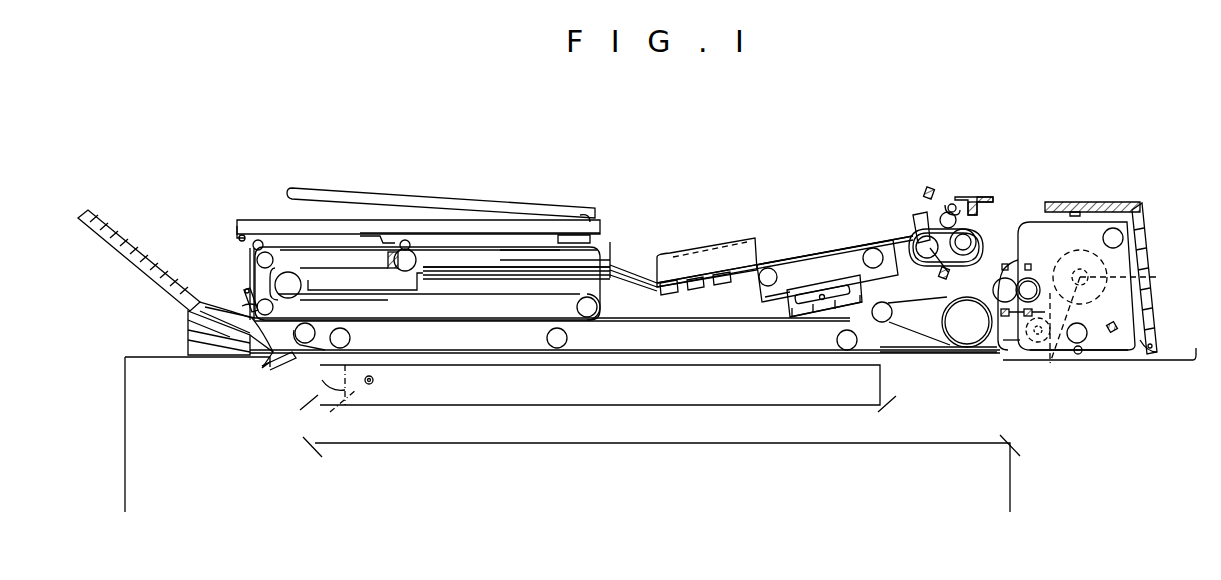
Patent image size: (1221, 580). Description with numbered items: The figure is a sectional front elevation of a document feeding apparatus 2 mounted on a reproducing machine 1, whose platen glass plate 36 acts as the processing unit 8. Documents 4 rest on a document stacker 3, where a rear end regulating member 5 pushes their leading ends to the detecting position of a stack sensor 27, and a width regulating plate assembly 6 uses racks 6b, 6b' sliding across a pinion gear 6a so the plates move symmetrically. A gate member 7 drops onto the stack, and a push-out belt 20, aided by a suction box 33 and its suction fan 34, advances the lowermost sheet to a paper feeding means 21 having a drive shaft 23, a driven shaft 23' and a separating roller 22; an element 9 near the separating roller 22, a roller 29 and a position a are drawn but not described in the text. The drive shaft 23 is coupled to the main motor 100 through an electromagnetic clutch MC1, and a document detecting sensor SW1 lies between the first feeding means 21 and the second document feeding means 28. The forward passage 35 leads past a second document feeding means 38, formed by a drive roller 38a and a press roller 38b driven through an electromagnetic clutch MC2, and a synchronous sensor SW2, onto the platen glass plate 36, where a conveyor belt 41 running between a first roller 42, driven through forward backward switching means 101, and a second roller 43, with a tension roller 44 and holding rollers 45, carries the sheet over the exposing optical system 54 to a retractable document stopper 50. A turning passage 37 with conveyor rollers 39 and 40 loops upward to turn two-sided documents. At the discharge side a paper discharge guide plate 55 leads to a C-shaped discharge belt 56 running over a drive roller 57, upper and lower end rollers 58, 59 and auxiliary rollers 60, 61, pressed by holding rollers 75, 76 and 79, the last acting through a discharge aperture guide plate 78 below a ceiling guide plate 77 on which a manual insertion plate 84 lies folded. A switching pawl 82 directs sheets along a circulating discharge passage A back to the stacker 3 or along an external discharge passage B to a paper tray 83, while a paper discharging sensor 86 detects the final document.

The reproducing machine 1 is at (1108, 345).
The document feeding apparatus 2 is at (1063, 197).
The document stacker 3 is at (762, 268).
The documents 4 is at (630, 262).
The rear end regulating member 5 is at (425, 285).
The feed roller unit 6 is at (672, 258).
The pinion gear 6a is at (693, 288).
The rack 6b is at (659, 339).
The rack 6b' is at (730, 335).
The gate member 7 is at (916, 234).
The processing unit 8 is at (496, 355).
The bracket 9 is at (977, 197).
The push-out belt 20 is at (805, 285).
The paper feeding means 21 is at (880, 245).
The separating roller 22 is at (948, 212).
The drive shaft 23 is at (969, 264).
The driven shaft 23' is at (927, 275).
The stack sensor 27 is at (928, 192).
The second document feeding means 28 is at (866, 253).
The roller 29 is at (766, 270).
The suction box 33 is at (775, 300).
The suction fan 34 is at (802, 312).
The forward passage 35 is at (1015, 280).
The platen glass plate 36 is at (926, 336).
The turning passage 37 is at (1125, 350).
The second document feeding means 38 is at (1003, 318).
The drive roller 38a is at (1118, 233).
The press roller 38b is at (1002, 340).
The conveyor roller 39 is at (1082, 338).
The conveyor roller 40 is at (1150, 240).
The conveyor belt 41 is at (952, 346).
The first roller 42 is at (967, 322).
The second roller 43 is at (298, 342).
The tension roller 44 is at (885, 317).
The holding rollers 45 is at (340, 338).
The document stopper 50 is at (290, 365).
The exposing optical system 54 is at (849, 446).
The paper discharge guide plate 55 is at (245, 340).
The discharge belt 56 is at (275, 248).
The drive roller 57 is at (289, 283).
The upper end roller 58 is at (415, 270).
The lower end roller 59 is at (588, 306).
The auxiliary roller 60 is at (206, 327).
The auxiliary roller 61 is at (257, 257).
The holding roller 75 is at (255, 318).
The holding roller 76 is at (252, 243).
The ceiling guide plate 77 is at (560, 226).
The discharge aperture guide plate 78 is at (398, 235).
The holding roller 79 is at (405, 245).
The switching pawl 82 is at (240, 300).
The paper tray 83 is at (116, 240).
The manual insertion plate 84 is at (520, 204).
The paper discharging sensor 86 is at (392, 258).
The main motor 100 is at (1125, 306).
The forward backward switching means 101 is at (1053, 345).
The circulating discharge passage A is at (249, 268).
The external discharge passage B is at (246, 305).
The sheet path a is at (905, 248).
The electromagnetic clutch MC1 is at (998, 263).
The electromagnetic clutch MC2 is at (1030, 300).
The document detecting sensor SW1 is at (1028, 263).
The synchronous sensor SW2 is at (1118, 328).